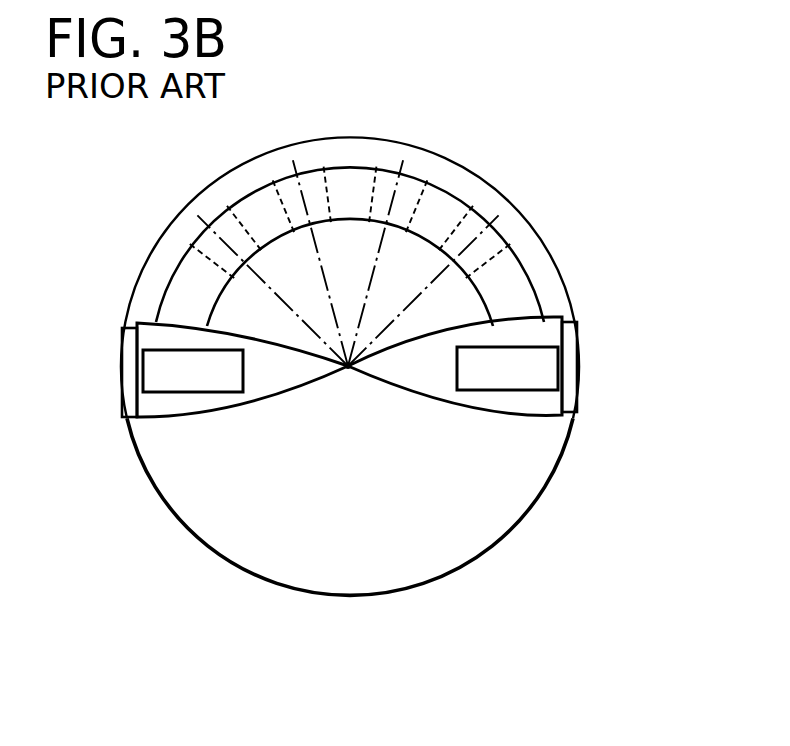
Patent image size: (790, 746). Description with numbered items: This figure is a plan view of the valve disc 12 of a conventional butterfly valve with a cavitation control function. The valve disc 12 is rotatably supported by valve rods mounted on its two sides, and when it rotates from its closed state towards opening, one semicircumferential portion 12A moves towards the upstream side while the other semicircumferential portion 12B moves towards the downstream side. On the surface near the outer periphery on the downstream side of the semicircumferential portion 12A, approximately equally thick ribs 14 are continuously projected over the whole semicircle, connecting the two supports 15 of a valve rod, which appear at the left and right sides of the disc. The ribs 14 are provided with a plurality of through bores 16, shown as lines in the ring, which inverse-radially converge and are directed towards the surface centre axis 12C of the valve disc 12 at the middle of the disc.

The valve disc 12 is at (396, 363).
The semicircumferential portion 12A is at (375, 138).
The semicircumferential portion 12B is at (338, 598).
The surface centre axis 12C is at (348, 370).
The ribs 14 is at (342, 167).
The supports 15 is at (526, 415).
The through bores 16 is at (283, 190).